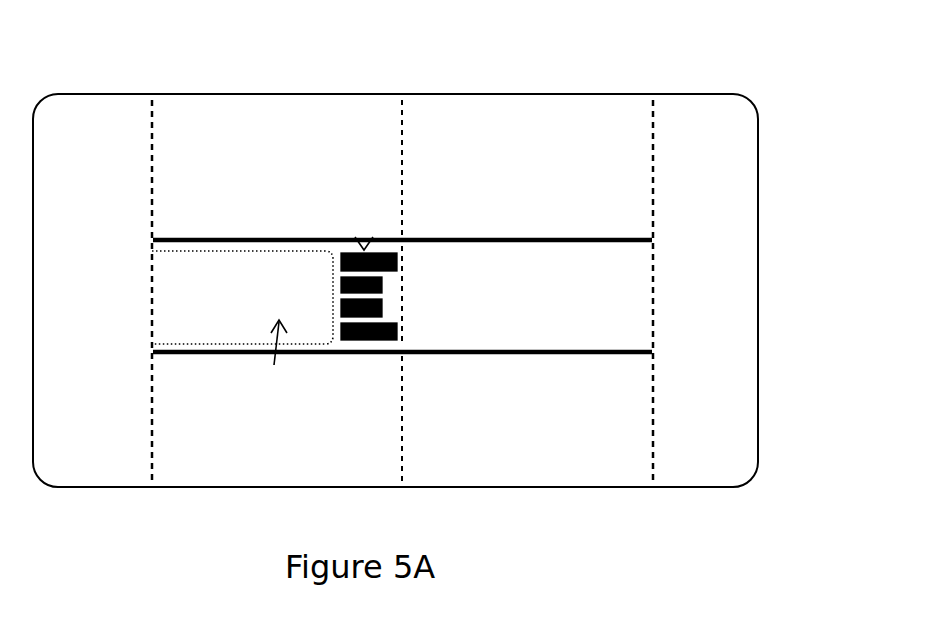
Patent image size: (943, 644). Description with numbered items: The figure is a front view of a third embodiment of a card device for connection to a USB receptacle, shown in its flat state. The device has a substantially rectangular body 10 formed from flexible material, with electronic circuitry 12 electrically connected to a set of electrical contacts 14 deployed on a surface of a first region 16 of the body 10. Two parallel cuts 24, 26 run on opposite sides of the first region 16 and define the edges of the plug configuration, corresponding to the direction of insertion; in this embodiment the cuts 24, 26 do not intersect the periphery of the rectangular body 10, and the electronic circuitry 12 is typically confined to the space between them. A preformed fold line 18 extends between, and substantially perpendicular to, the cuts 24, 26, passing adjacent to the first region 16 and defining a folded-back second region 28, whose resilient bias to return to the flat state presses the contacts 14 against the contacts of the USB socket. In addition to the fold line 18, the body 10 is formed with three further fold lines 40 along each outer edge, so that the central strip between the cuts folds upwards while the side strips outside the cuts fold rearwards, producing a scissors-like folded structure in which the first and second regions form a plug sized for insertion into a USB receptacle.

The body 10 is at (208, 95).
The electronic circuitry 12 is at (274, 365).
The electrical contacts 14 is at (362, 245).
The first region 16 is at (368, 245).
The preformed fold line 18 is at (403, 327).
The cut 24 is at (538, 240).
The cut 26 is at (598, 355).
The second region 28 is at (505, 266).
The fold lines 40 is at (152, 117).